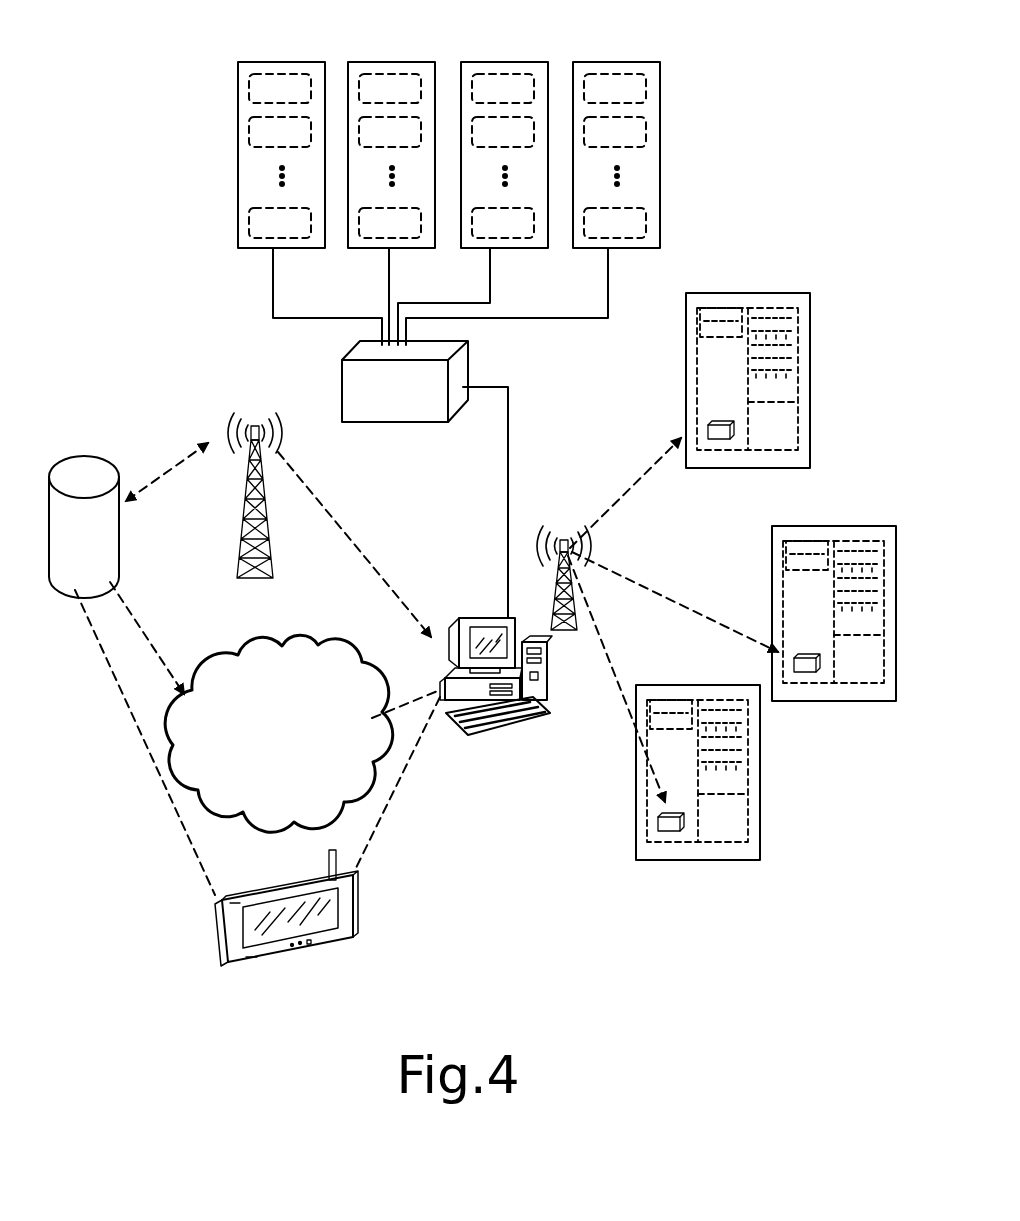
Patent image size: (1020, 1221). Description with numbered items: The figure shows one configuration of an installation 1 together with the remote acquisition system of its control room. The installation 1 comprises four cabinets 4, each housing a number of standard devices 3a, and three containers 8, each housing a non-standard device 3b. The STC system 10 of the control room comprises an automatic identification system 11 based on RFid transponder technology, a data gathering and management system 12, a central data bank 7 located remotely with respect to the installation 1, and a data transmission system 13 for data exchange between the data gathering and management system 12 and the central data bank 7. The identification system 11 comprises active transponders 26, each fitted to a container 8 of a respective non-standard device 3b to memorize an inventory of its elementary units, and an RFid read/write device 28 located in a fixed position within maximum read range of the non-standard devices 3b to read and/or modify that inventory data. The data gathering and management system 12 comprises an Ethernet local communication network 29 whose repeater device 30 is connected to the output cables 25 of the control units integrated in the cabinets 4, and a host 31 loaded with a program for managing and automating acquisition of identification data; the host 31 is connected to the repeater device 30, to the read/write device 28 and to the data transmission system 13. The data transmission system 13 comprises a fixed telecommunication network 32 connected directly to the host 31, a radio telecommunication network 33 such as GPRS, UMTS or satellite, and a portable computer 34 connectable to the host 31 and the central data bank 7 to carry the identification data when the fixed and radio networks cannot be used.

The installation 1 is at (716, 193).
The standard devices 3a is at (249, 90).
The non-standard devices 3b is at (798, 430).
The cabinets 4 is at (317, 64).
The central data bank 7 is at (82, 460).
The containers 8 is at (786, 300).
The STC system 10 is at (520, 835).
The automatic identification system 11 is at (752, 504).
The data gathering and management system 12 is at (560, 389).
The data transmission system 13 is at (116, 752).
The output cables 25 is at (290, 318).
The active transponders 26 is at (718, 442).
The RFid read/write device 28 is at (568, 632).
The Ethernet local communication network (LAN) 29 is at (244, 297).
The repeater device (LAN hub) 30 is at (388, 418).
The host 31 is at (480, 618).
The fixed telecommunication network 32 is at (292, 648).
The radio telecommunication network 33 is at (228, 518).
The portable computer 34 is at (240, 935).